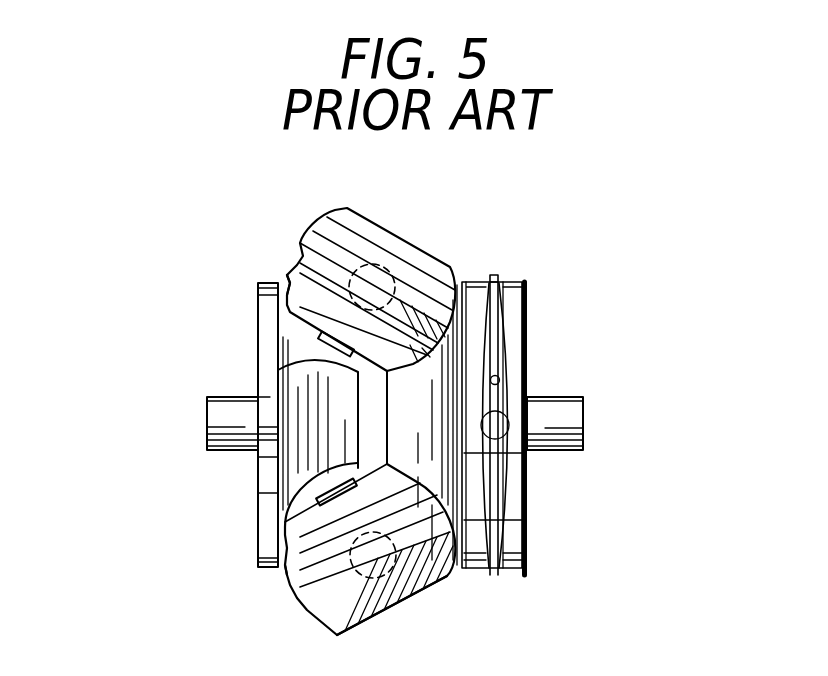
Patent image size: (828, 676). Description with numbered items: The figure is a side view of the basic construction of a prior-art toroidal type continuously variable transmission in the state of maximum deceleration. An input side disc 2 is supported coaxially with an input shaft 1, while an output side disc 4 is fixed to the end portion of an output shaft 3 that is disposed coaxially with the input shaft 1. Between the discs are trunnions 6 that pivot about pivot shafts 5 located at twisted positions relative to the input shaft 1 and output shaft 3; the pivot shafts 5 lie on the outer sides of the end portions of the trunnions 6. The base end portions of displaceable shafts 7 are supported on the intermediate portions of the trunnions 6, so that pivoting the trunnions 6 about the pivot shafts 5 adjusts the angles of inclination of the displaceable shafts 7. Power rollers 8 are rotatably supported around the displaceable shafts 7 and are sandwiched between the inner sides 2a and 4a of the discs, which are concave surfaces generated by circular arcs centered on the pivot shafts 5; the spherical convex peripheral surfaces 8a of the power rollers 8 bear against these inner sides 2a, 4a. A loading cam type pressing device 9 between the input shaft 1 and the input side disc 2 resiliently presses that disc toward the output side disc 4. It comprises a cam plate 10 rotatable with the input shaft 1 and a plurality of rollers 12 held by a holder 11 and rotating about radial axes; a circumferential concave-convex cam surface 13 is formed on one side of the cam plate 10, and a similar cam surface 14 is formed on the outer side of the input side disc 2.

The input shaft 1 is at (585, 418).
The input side disc 2 is at (482, 323).
The inner side of input side disc 2a is at (447, 578).
The output shaft 3 is at (217, 418).
The output side disc 4 is at (270, 349).
The inner side of output side disc 4a is at (278, 370).
The pivot shaft 5 is at (372, 268).
The trunnion 6 is at (330, 230).
The displaceable shaft 7 is at (320, 345).
The power roller 8 is at (282, 270).
The peripheral surface of power roller 8a is at (293, 290).
The loading cam type pressing device 9 is at (525, 423).
The cam plate 10 is at (515, 320).
The holder 11 is at (494, 274).
The roller 12 is at (484, 292).
The cam surface 13 is at (500, 380).
The cam surface 14 is at (462, 468).